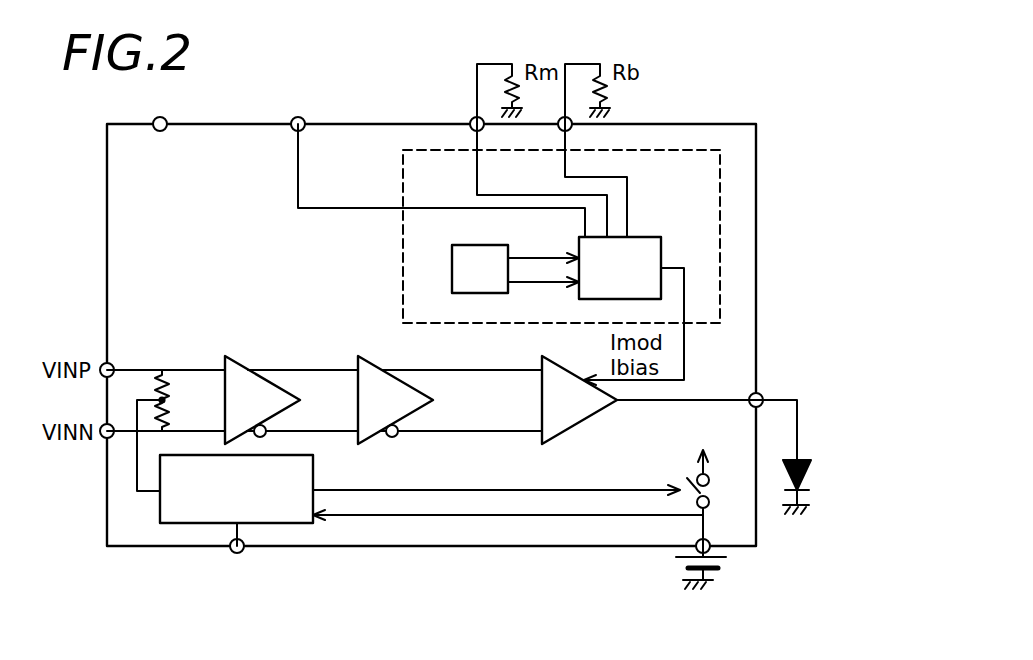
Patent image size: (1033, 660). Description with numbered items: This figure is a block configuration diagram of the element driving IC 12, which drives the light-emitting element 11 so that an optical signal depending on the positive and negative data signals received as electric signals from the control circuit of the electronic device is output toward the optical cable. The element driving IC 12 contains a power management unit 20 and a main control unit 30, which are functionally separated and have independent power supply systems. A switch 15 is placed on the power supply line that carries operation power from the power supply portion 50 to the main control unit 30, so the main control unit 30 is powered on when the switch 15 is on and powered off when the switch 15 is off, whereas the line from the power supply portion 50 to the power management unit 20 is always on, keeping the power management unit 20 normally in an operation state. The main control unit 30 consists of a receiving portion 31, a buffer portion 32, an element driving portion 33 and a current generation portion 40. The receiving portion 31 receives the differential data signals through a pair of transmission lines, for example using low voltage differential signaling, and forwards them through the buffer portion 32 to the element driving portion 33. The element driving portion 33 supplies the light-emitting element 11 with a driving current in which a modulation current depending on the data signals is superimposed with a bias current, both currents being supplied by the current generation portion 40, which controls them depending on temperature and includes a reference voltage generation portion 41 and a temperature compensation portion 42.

The light-emitting element 11 is at (813, 458).
The element driving IC 12 is at (729, 110).
The switch 15 is at (690, 489).
The power management unit 20 is at (160, 505).
The main control unit 30 is at (431, 359).
The receiving portion 31 is at (243, 365).
The buffer portion 32 is at (377, 363).
The element driving portion 33 is at (559, 366).
The current generation portion 40 is at (577, 259).
The reference voltage generation portion 41 is at (487, 245).
The temperature compensation portion 42 is at (641, 237).
The power supply portion 50 is at (676, 558).